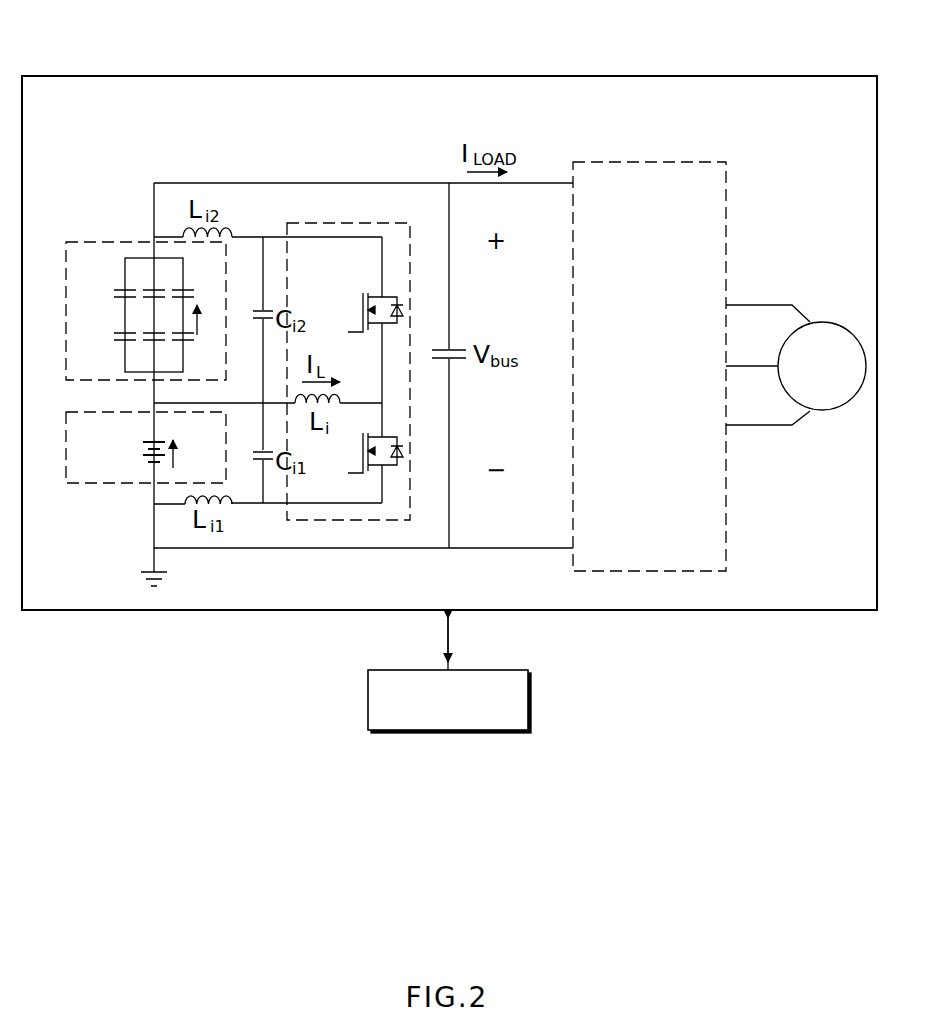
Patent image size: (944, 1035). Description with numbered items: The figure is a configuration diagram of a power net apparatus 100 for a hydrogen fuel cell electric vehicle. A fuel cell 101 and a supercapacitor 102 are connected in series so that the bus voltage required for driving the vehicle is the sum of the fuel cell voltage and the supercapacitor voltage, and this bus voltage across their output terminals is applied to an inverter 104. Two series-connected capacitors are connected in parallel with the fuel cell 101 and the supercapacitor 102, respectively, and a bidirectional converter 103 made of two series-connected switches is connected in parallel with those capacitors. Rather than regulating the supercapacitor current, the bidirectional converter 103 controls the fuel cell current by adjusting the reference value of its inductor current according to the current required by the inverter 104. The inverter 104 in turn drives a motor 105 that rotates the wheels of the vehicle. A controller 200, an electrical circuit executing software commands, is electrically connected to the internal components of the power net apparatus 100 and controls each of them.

The power net apparatus 100 is at (447, 76).
The fuel cell 101 is at (82, 488).
The supercapacitor 102 is at (125, 242).
The bidirectional converter 103 is at (329, 223).
The inverter 104 is at (669, 210).
The motor 105 is at (820, 322).
The controller 200 is at (528, 697).